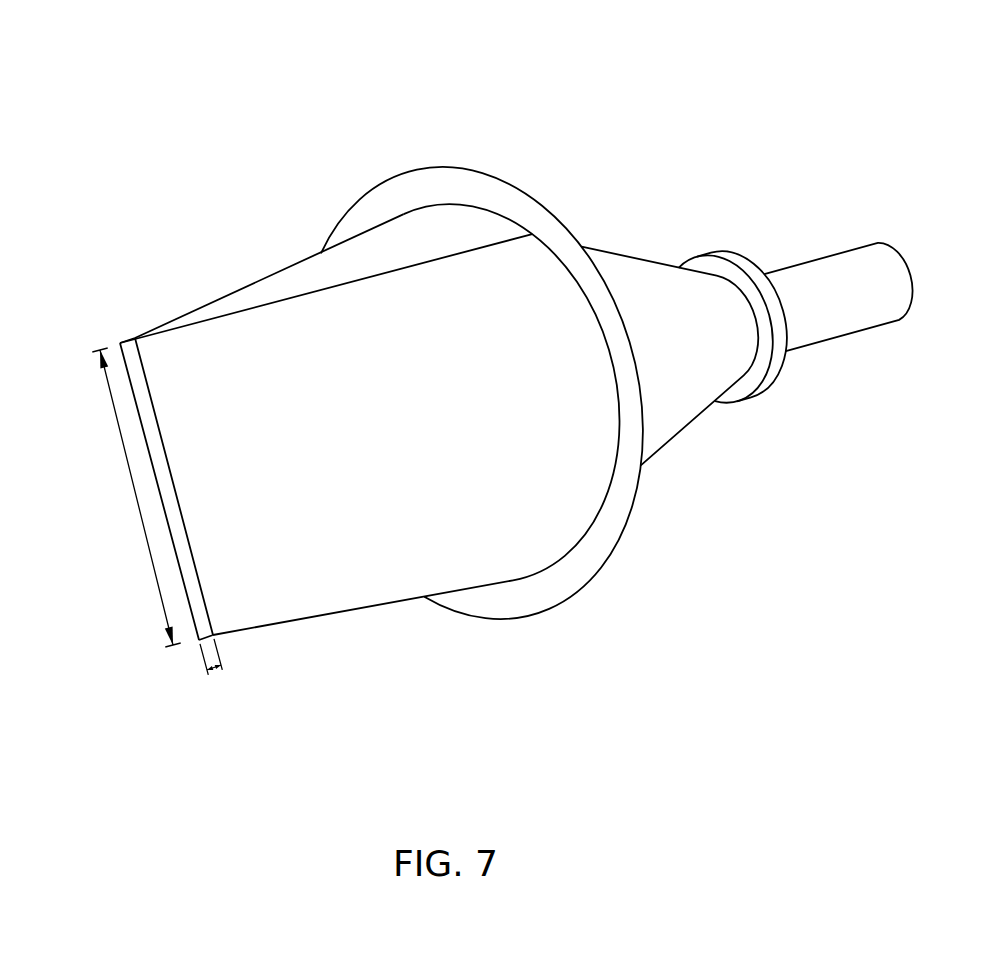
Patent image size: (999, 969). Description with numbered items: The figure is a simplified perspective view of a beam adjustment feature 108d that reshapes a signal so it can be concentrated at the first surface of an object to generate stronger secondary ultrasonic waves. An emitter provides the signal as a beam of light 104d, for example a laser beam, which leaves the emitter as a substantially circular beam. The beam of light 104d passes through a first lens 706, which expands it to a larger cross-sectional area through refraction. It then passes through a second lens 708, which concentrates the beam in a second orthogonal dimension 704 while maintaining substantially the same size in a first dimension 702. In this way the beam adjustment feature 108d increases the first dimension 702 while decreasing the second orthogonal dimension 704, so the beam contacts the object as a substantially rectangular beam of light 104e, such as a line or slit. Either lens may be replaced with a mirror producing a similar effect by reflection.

The beam adjustment feature 108d is at (900, 100).
The substantially rectangular beam of light 104e is at (178, 484).
The beam of light 104d is at (902, 292).
The first dimension 702 is at (128, 463).
The second orthogonal dimension 704 is at (214, 672).
The first lens 706 is at (757, 389).
The second lens 708 is at (517, 600).